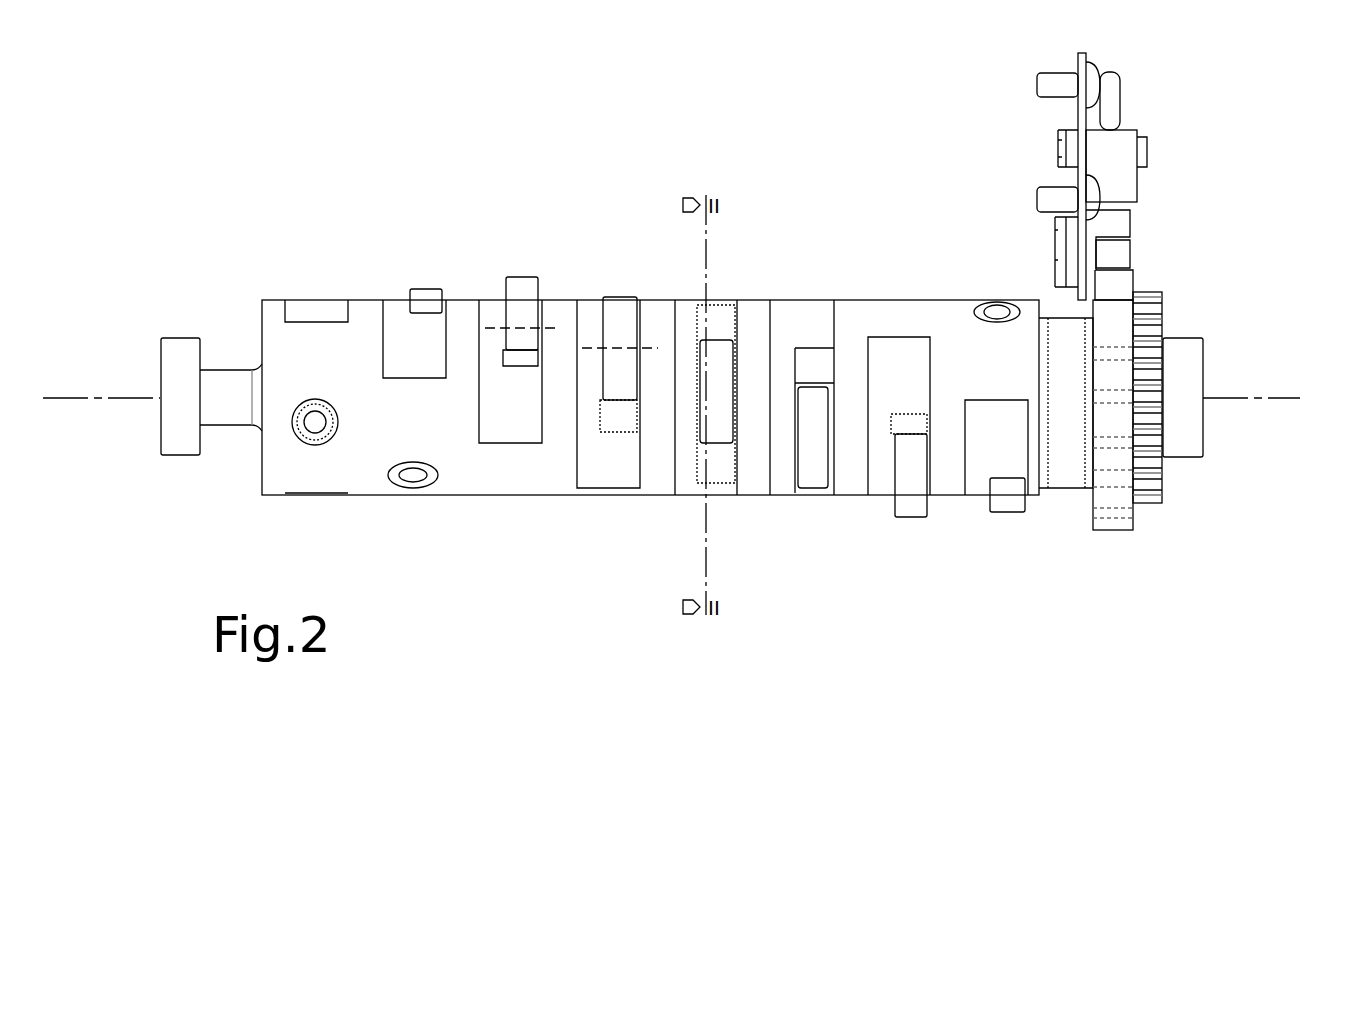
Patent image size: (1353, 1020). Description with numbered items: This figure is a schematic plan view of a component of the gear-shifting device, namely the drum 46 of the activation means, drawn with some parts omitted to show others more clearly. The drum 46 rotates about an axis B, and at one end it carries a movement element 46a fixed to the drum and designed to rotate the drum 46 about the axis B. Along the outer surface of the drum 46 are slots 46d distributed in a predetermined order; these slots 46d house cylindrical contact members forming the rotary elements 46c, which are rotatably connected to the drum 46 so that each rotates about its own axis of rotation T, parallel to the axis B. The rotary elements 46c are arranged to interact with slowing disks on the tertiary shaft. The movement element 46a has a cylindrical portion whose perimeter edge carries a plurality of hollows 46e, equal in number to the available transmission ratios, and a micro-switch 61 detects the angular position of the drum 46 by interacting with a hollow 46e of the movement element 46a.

The drum 46 is at (566, 205).
The movement element 46a is at (1155, 533).
The rotary elements 46c is at (718, 357).
The slots 46d is at (698, 430).
The hollows 46e is at (1107, 372).
The micro-switch 61 is at (1170, 187).
The axis of rotation T is at (492, 332).
The axis B is at (1250, 398).